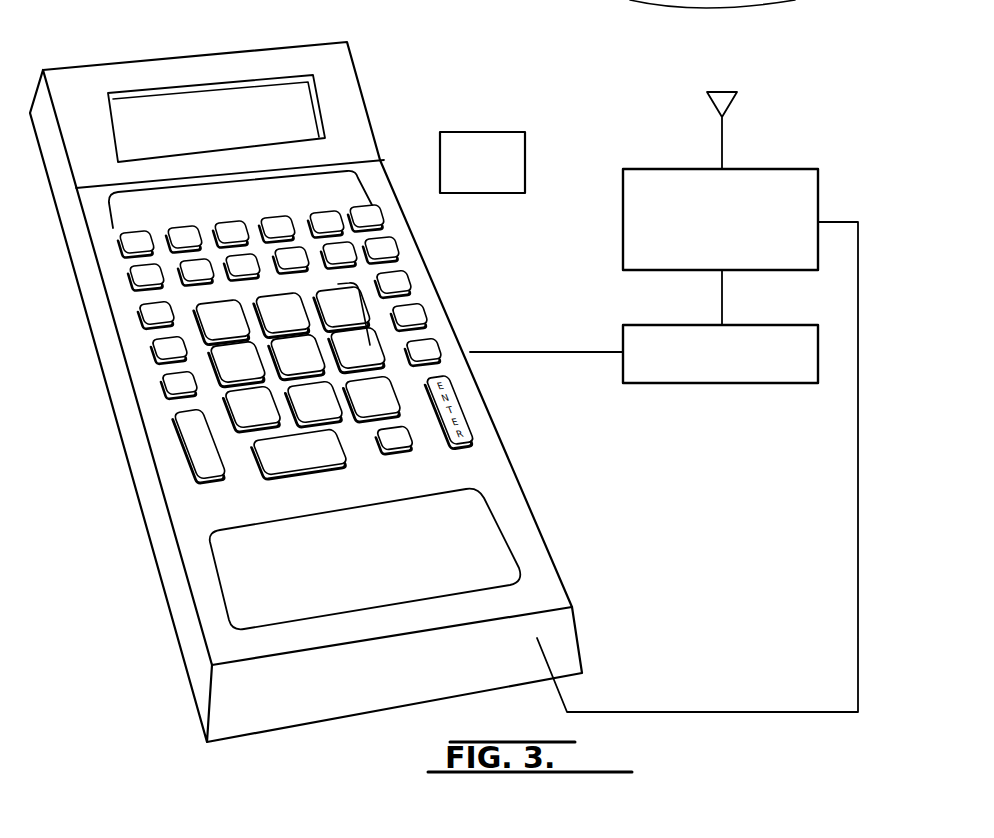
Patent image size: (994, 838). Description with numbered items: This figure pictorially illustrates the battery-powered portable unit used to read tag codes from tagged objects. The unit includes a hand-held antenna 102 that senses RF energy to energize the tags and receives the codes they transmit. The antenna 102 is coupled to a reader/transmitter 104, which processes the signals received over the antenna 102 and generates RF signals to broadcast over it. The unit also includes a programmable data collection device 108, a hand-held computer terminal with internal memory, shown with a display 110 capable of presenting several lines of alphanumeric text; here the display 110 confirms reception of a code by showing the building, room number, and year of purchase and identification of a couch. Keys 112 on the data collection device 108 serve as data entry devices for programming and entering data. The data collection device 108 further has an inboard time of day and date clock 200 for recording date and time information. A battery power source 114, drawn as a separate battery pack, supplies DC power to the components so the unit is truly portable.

The antenna 102 is at (707, 95).
The reader/transmitter 104 is at (792, 169).
The data collection device 108 is at (540, 540).
The display 110 is at (243, 98).
The keys 112 is at (365, 348).
The battery power source 114 is at (705, 383).
The time of day and date clock 200 is at (384, 160).